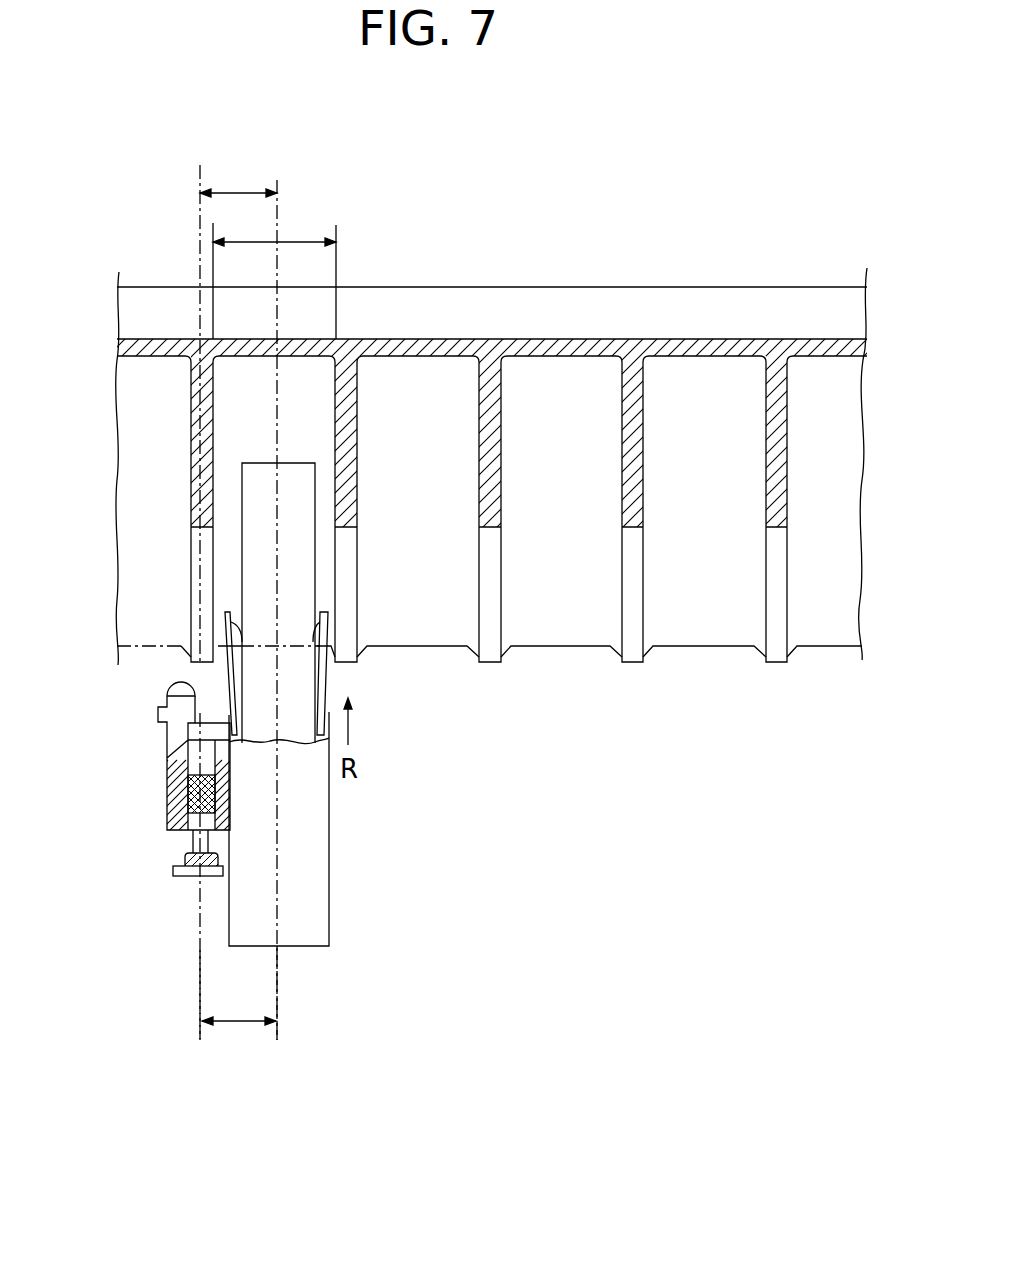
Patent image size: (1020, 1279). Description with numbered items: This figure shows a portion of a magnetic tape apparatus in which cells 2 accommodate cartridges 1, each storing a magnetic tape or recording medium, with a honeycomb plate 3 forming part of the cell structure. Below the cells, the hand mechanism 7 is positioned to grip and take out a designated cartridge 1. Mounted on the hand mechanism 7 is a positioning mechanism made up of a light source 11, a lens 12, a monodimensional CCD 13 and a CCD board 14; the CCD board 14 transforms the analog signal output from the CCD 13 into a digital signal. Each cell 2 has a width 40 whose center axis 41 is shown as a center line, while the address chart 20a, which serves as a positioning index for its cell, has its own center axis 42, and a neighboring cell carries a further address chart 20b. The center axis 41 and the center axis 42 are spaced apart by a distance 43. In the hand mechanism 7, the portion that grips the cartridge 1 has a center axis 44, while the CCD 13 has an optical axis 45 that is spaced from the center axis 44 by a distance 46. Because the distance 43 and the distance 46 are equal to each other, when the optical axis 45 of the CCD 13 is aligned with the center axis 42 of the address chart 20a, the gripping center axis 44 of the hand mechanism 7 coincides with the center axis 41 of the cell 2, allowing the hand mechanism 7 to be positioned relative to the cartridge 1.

The cartridge 1 is at (298, 492).
The cell 2 is at (298, 385).
The honeycomb plate 3 is at (620, 310).
The hand mechanism 7 is at (311, 872).
The light source 11 is at (172, 688).
The lens 12 is at (193, 790).
The monodimensional CCD 13 is at (186, 856).
The CCD board 14 is at (180, 876).
The address chart 20a is at (193, 540).
The address chart 20b is at (345, 530).
The width 40 is at (288, 240).
The center axis 41 is at (277, 212).
The center axis 42 is at (199, 228).
The distance 43 is at (236, 192).
The center axis 44 is at (277, 990).
The optical axis 45 is at (202, 990).
The distance 46 is at (240, 1022).